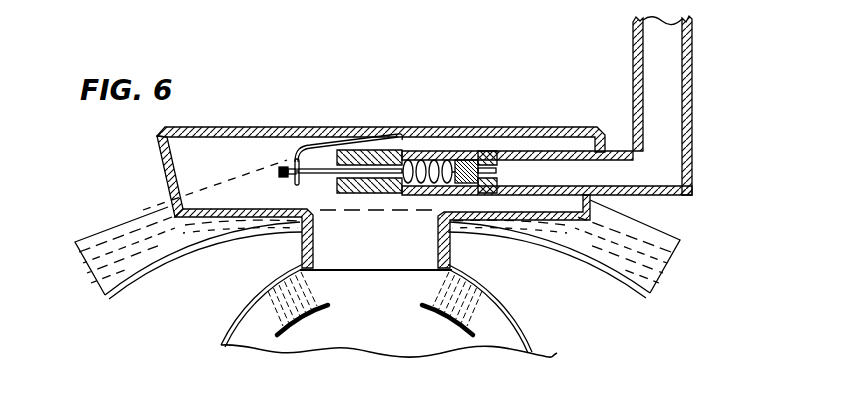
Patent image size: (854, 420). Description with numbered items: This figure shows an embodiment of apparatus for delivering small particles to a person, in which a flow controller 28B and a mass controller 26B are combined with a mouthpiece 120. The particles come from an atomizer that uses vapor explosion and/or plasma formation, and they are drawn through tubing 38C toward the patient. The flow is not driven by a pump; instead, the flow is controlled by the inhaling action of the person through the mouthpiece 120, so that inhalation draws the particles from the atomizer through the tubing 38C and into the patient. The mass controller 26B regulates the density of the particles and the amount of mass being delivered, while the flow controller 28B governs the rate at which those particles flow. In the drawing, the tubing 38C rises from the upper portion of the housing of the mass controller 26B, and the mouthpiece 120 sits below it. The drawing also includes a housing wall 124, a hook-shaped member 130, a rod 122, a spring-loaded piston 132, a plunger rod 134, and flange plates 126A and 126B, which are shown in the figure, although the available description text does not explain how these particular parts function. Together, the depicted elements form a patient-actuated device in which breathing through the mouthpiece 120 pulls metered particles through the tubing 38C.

The mass controller 26B is at (333, 92).
The housing side wall 124 is at (157, 158).
The tubing 38C is at (692, 84).
The plunger rod 134 is at (492, 171).
The spring-loaded piston 132 is at (473, 160).
The actuating rod 122 is at (322, 187).
The hook member 130 is at (308, 150).
The left flange plate 126A is at (103, 229).
The right flange plate 126B is at (650, 233).
The mouthpiece 120 is at (531, 306).
The flow controller 28B is at (232, 303).